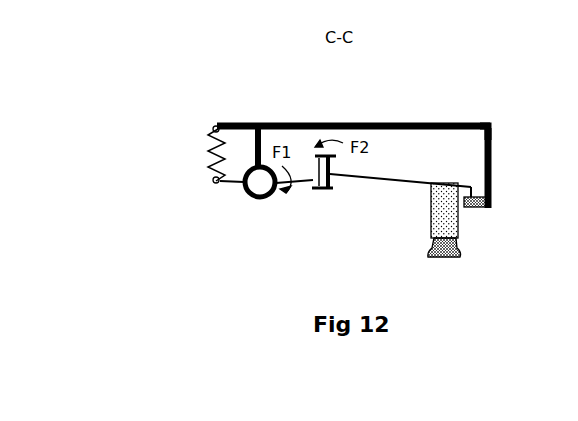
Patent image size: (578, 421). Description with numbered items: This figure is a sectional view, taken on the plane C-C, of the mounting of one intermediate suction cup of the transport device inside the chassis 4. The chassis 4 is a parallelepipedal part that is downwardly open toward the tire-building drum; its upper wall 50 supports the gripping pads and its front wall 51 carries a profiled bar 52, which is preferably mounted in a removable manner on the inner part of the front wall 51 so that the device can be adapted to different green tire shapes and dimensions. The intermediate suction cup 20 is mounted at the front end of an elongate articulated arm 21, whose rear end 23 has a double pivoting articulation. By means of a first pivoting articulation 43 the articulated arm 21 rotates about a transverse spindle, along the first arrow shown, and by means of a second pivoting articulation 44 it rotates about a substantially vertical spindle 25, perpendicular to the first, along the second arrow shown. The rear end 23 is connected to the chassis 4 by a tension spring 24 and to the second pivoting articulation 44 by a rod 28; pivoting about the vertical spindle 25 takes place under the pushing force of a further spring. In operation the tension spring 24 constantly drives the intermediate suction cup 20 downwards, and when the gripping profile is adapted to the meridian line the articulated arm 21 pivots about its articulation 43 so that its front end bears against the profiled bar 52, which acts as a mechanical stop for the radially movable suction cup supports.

The chassis 4 is at (397, 122).
The upper wall 50 is at (460, 122).
The front wall 51 is at (492, 157).
The first pivoting articulation 43 is at (252, 122).
The tension spring 24 is at (210, 152).
The rear end 23 is at (227, 187).
The rod 28 is at (318, 155).
The vertical spindle 25 is at (320, 186).
The second pivoting articulation 44 is at (312, 188).
The articulated arm 21 is at (366, 186).
The intermediate suction cup 20 is at (451, 245).
The profiled bar 52 is at (489, 208).